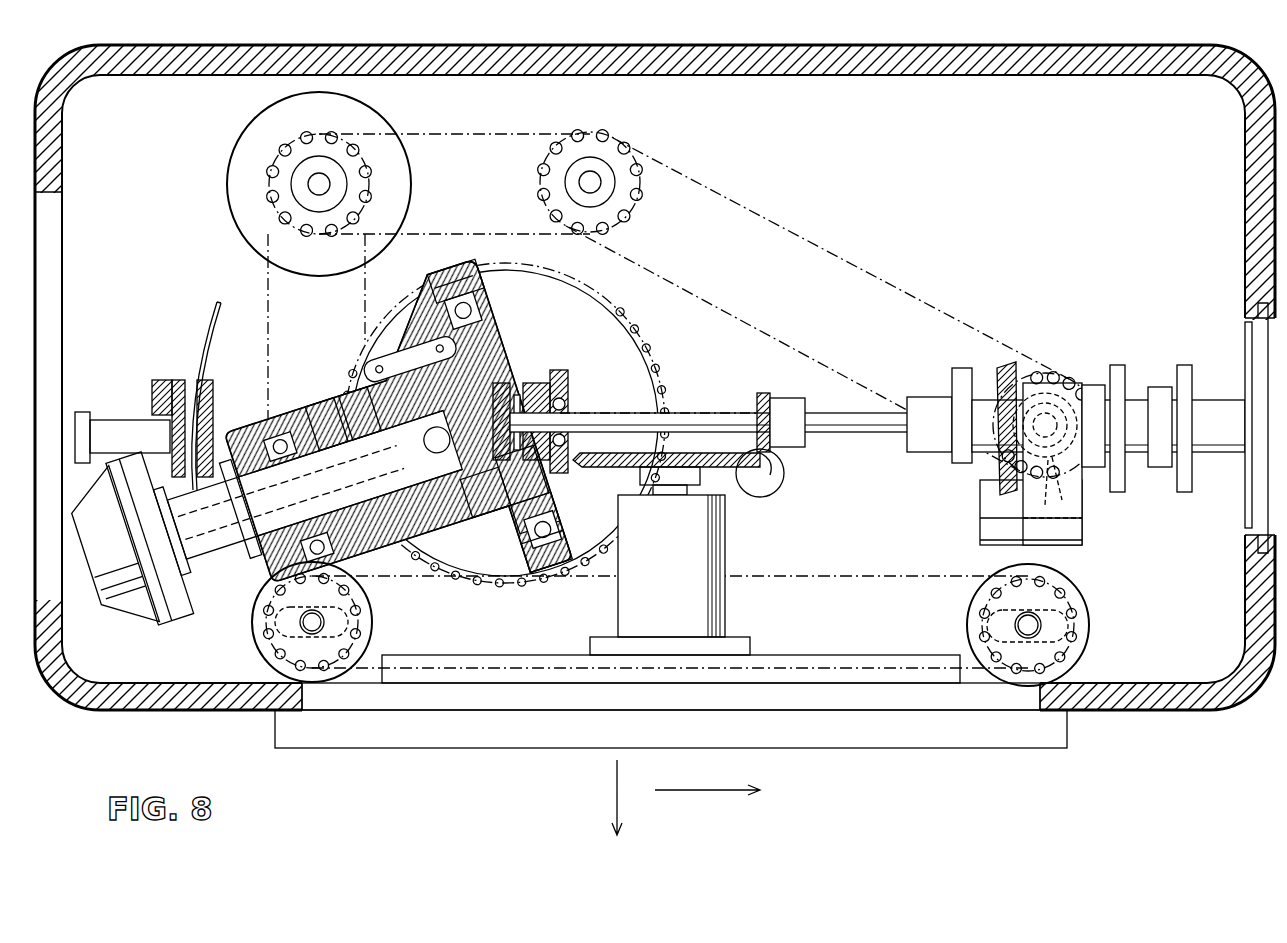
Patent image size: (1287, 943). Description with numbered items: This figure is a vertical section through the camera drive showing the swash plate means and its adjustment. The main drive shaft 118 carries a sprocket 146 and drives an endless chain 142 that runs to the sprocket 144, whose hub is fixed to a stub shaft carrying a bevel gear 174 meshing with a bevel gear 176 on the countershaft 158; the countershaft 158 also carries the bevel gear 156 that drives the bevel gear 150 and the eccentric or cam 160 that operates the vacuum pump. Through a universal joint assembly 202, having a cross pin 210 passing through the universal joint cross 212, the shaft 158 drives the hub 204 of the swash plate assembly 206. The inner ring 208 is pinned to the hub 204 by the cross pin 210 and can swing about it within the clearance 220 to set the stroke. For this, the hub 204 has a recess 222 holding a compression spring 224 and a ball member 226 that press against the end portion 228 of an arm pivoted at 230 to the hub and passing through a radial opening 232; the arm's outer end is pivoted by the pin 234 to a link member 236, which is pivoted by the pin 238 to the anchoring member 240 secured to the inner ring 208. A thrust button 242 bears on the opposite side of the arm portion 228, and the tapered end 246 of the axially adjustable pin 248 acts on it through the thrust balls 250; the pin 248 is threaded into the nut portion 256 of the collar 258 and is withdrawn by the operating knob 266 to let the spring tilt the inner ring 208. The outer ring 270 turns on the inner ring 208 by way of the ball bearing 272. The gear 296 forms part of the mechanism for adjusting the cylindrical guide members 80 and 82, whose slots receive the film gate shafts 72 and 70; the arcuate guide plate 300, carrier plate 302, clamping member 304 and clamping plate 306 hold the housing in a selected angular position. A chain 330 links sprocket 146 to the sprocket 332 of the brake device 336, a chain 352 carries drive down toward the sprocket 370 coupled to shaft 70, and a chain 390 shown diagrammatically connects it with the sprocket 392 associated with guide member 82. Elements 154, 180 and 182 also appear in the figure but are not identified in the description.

The drive shaft 70 is at (300, 622).
The drive shaft 72 is at (1030, 628).
The cylindrical guide member 80 is at (362, 630).
The cylindrical guide member 82 is at (1090, 610).
The main drive shaft 118 is at (580, 185).
The endless chain 142 is at (812, 225).
The sprocket 144 is at (1065, 375).
The sprocket 146 is at (618, 142).
The bevel gear 150 is at (730, 467).
The pedestal 154 is at (700, 608).
The bevel gear 156 is at (775, 395).
The countershaft 158 is at (725, 410).
The eccentric or cam 160 is at (960, 368).
The bevel gear 174 is at (1058, 458).
The bevel gear 176 is at (1005, 362).
The disk 180 is at (1118, 365).
The disk 182 is at (1185, 365).
The universal joint assembly 202 is at (553, 365).
The hub 204 is at (585, 492).
The swash plate assembly 206 is at (498, 286).
The inner ring 208 is at (486, 330).
The cross pin 210 is at (515, 395).
The universal joint cross 212 is at (568, 378).
The clearance 220 is at (512, 360).
The recess 222 is at (488, 515).
The compression spring 224 is at (480, 495).
The ball member 226 is at (355, 340).
The end portion of arm 228 is at (448, 508).
The arm pivot 230 is at (355, 390).
The radial opening 232 is at (395, 360).
The pin 234 is at (360, 370).
The link member 236 is at (455, 340).
The pin 238 is at (425, 310).
The anchoring member 240 is at (446, 340).
The thrust button 242 is at (368, 490).
The tapered end 246 is at (335, 415).
The axially adjustable pin 248 is at (352, 470).
The thrust balls 250 is at (420, 505).
The threaded nut portion 256 is at (262, 540).
The collar 258 is at (230, 545).
The operating knob 266 is at (150, 600).
The outer ring 270 is at (552, 570).
The ball bearing 272 is at (560, 530).
The gear 296 is at (672, 368).
The arcuate guide plate 300 is at (205, 320).
The carrier plate 302 is at (175, 380).
The clamping member 304 is at (118, 420).
The clamping plate 306 is at (208, 380).
The chain 330 is at (475, 135).
The sprocket 332 is at (310, 142).
The brake device 336 is at (240, 155).
The chain 352 is at (266, 302).
The sprocket 370 is at (270, 645).
The chain 390 is at (900, 576).
The sprocket 392 is at (990, 603).